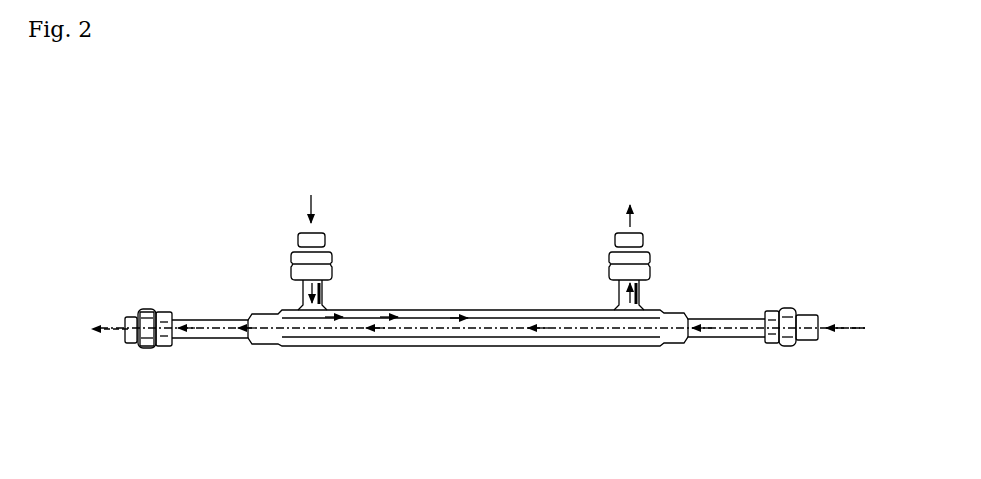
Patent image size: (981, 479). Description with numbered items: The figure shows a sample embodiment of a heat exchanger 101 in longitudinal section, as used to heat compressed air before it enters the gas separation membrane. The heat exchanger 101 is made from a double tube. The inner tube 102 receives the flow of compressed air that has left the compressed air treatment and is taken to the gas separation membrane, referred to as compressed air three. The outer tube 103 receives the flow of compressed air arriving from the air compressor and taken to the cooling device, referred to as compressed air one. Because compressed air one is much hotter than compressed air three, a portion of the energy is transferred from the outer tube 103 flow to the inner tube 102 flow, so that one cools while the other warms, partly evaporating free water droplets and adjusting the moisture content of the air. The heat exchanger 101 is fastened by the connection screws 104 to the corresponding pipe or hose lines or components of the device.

The heat exchanger 101 is at (822, 165).
The inner tube 102 is at (152, 360).
The outer tube 103 is at (430, 310).
The connection screws 104 is at (128, 312).